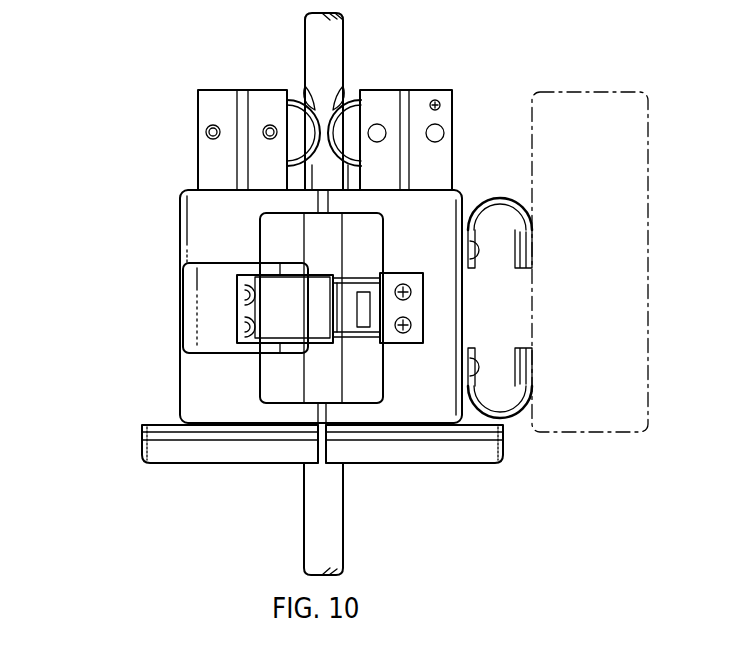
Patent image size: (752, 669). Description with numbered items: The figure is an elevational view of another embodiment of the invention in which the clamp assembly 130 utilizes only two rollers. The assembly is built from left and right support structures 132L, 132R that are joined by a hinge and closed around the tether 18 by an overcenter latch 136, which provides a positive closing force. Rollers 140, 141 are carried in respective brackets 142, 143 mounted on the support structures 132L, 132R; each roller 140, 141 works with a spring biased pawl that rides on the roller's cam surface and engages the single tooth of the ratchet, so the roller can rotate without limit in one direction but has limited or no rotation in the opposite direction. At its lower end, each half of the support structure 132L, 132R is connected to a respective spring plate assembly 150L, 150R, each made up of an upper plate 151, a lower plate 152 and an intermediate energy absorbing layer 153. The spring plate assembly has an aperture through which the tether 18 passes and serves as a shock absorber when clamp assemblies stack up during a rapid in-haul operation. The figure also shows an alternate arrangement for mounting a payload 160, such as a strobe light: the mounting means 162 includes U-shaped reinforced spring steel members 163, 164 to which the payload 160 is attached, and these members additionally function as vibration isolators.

The tether 18 is at (347, 42).
The clamp assembly 130 is at (148, 315).
The left support structure 132L is at (197, 222).
The right support structure 132R is at (447, 215).
The overcenter latch 136 is at (277, 323).
The roller 140 is at (300, 120).
The roller 141 is at (333, 115).
The bracket 142 is at (223, 93).
The bracket 143 is at (415, 98).
The left spring plate assembly 150L is at (140, 456).
The right spring plate assembly 150R is at (505, 465).
The upper plate 151 is at (157, 430).
The lower plate 152 is at (177, 468).
The intermediate energy absorbing layer 153 is at (148, 438).
The payload 160 is at (585, 92).
The mounting means 162 is at (509, 290).
The U-shaped reinforced spring steel member 163 is at (507, 198).
The U-shaped reinforced spring steel member 164 is at (490, 410).